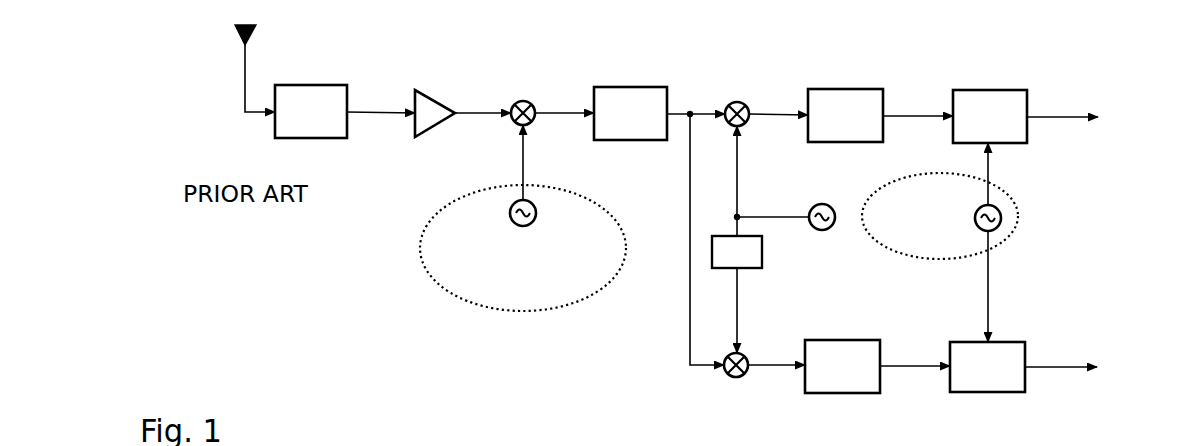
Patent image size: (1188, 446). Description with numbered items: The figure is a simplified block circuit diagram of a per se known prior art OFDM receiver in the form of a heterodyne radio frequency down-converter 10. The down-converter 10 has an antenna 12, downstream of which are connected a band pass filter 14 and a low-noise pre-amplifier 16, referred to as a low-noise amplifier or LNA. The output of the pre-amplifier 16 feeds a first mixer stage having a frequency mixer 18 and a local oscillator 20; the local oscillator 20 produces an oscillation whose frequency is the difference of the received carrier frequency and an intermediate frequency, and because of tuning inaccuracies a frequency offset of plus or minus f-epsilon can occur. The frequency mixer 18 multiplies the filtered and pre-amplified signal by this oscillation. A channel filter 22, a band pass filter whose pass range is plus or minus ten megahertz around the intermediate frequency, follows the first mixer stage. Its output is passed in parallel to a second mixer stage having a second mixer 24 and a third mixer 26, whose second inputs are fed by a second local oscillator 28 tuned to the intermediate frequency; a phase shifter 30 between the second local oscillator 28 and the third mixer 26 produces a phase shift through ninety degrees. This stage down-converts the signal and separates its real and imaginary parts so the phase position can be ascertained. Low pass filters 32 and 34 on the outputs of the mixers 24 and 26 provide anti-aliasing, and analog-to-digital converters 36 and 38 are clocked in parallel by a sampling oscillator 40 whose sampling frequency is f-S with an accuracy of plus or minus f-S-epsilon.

The heterodyne radio frequency down-converter 10 is at (1064, 85).
The antenna 12 is at (232, 35).
The band pass filter 14 is at (310, 85).
The low-noise pre-amplifier 16 is at (416, 95).
The frequency mixer 18 is at (523, 100).
The local oscillator 20 is at (511, 207).
The channel filter 22 is at (632, 87).
The second mixer 24 is at (737, 101).
The third mixer 26 is at (743, 357).
The second local oscillator 28 is at (815, 205).
The phase shifter 30 is at (762, 252).
The low pass filter 32 is at (845, 89).
The low pass filter 34 is at (832, 340).
The analog-to-digital converter 36 is at (989, 90).
The analog-to-digital converter 38 is at (967, 342).
The sampling oscillator 40 is at (1003, 218).